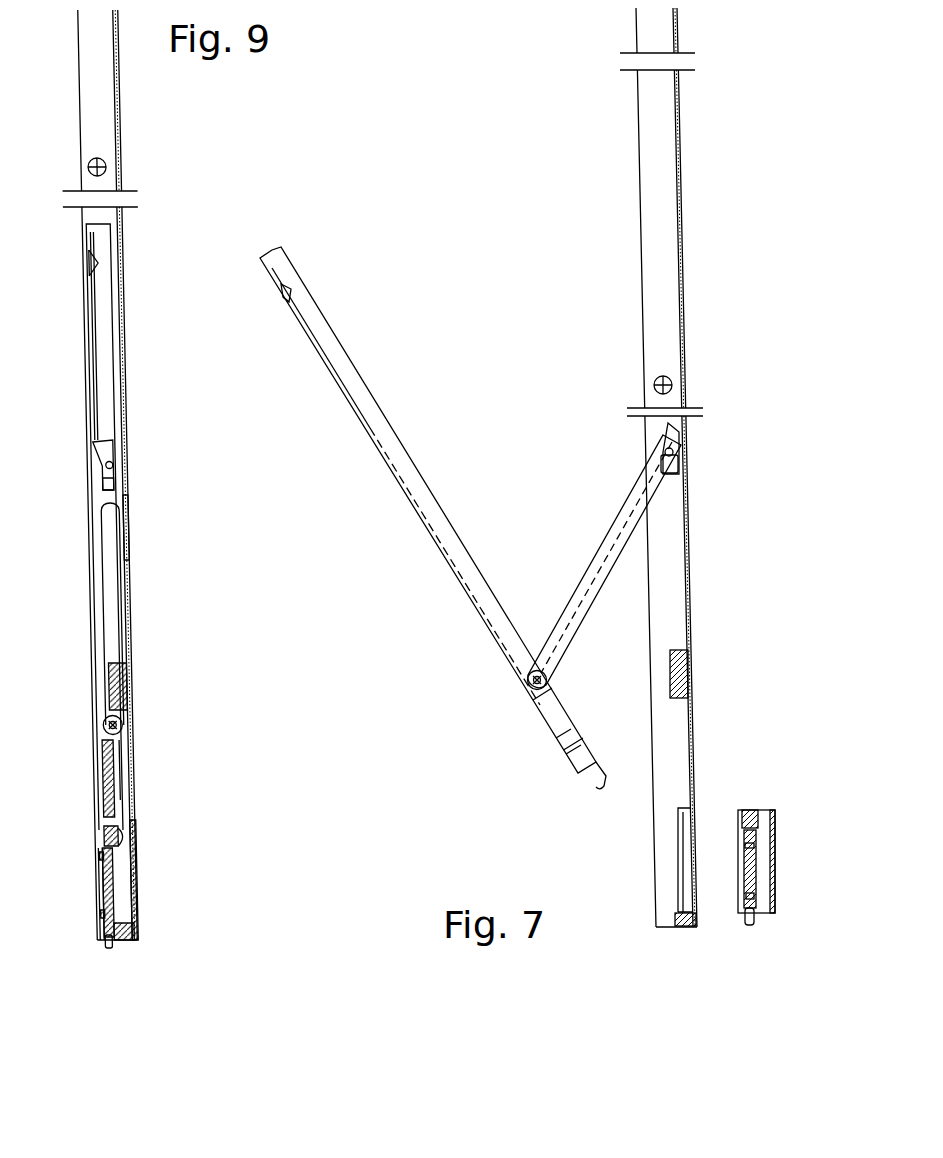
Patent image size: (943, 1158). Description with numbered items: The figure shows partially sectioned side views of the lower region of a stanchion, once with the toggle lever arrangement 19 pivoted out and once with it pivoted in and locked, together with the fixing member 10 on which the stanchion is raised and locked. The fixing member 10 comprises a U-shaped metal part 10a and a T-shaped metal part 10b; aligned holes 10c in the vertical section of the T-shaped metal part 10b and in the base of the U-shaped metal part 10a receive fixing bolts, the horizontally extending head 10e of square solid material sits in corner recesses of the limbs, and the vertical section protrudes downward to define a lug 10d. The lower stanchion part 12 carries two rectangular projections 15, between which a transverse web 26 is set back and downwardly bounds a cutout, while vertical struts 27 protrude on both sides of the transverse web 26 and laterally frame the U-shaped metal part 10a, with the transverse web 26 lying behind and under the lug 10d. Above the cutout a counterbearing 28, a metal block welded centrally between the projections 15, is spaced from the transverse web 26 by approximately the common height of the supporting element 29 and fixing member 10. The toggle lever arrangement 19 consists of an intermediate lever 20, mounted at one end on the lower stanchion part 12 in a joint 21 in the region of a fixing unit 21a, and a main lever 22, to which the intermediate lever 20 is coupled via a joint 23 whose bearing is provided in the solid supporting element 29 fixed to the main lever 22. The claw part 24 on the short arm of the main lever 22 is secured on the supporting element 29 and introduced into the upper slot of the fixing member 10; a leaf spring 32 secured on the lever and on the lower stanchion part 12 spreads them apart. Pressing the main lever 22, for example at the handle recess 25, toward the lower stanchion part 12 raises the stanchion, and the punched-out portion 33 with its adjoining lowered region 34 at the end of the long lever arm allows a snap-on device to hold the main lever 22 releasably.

In FIG. 7, the fixing member 10 is at (772, 762).
In FIG. 9, the U-shaped metal part 10a is at (135, 868).
In FIG. 9, the T-shaped metal part 10b is at (106, 891).
In FIG. 7, the T-shaped metal part 10b is at (745, 862).
In FIG. 9, the holes 10c is at (103, 857).
In FIG. 7, the holes 10c is at (755, 888).
In FIG. 9, the lug 10d is at (109, 940).
In FIG. 7, the lug 10d is at (750, 921).
In FIG. 7, the head 10e is at (747, 810).
In FIG. 9, the lower stanchion part 12 is at (38, 210).
In FIG. 7, the lower stanchion part 12 is at (755, 120).
In FIG. 9, the rectangular projections 15 is at (92, 68).
In FIG. 7, the rectangular projections 15 is at (658, 190).
In FIG. 7, the toggle lever arrangement 19 is at (500, 383).
In FIG. 9, the intermediate lever 20 is at (120, 497).
In FIG. 7, the intermediate lever 20 is at (613, 533).
In FIG. 9, the joint 21 is at (120, 462).
In FIG. 7, the joint 21 is at (685, 452).
In FIG. 9, the fixing unit 21a is at (110, 479).
In FIG. 7, the fixing unit 21a is at (687, 468).
In FIG. 9, the main lever 22 is at (103, 372).
In FIG. 7, the main lever 22 is at (395, 450).
In FIG. 9, the joint 23 is at (124, 727).
In FIG. 7, the joint 23 is at (527, 693).
In FIG. 9, the claw part 24 is at (130, 842).
In FIG. 7, the claw part 24 is at (607, 773).
In FIG. 9, the handle recess 25 is at (93, 345).
In FIG. 7, the handle recess 25 is at (313, 337).
In FIG. 9, the transverse web 26 is at (135, 938).
In FIG. 7, the transverse web 26 is at (682, 927).
In FIG. 7, the struts 27 is at (687, 853).
In FIG. 9, the counterbearing 28 is at (128, 683).
In FIG. 7, the counterbearing 28 is at (692, 668).
In FIG. 9, the supporting element 29 is at (102, 778).
In FIG. 7, the supporting element 29 is at (553, 740).
In FIG. 9, the leaf spring 32 is at (127, 526).
In FIG. 9, the punched-out portion 33 is at (85, 243).
In FIG. 7, the punched-out portion 33 is at (275, 280).
In FIG. 9, the lowered region 34 is at (85, 268).
In FIG. 7, the lowered region 34 is at (285, 298).